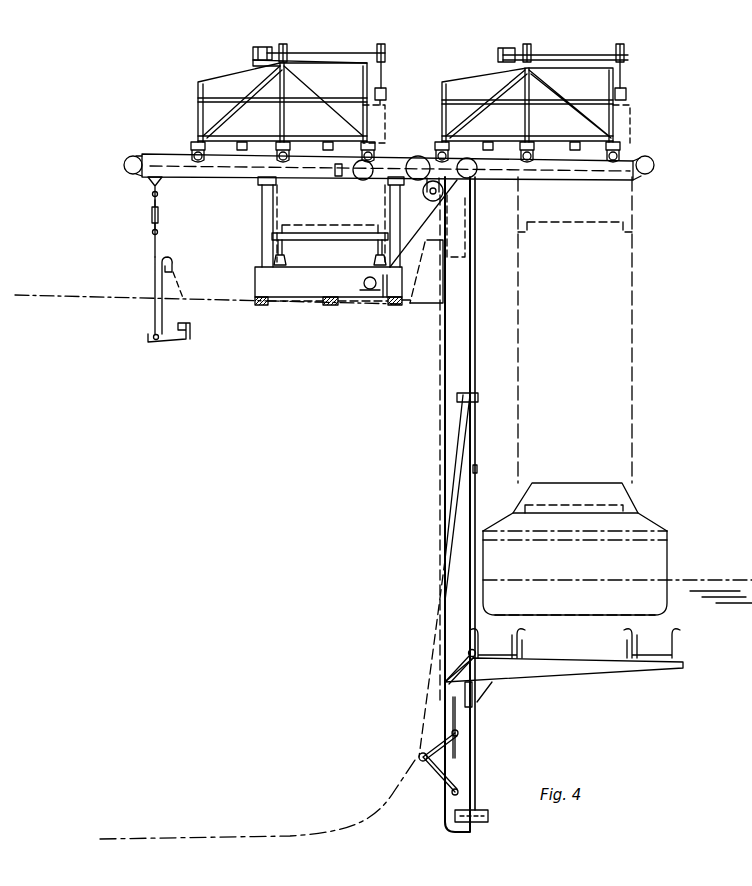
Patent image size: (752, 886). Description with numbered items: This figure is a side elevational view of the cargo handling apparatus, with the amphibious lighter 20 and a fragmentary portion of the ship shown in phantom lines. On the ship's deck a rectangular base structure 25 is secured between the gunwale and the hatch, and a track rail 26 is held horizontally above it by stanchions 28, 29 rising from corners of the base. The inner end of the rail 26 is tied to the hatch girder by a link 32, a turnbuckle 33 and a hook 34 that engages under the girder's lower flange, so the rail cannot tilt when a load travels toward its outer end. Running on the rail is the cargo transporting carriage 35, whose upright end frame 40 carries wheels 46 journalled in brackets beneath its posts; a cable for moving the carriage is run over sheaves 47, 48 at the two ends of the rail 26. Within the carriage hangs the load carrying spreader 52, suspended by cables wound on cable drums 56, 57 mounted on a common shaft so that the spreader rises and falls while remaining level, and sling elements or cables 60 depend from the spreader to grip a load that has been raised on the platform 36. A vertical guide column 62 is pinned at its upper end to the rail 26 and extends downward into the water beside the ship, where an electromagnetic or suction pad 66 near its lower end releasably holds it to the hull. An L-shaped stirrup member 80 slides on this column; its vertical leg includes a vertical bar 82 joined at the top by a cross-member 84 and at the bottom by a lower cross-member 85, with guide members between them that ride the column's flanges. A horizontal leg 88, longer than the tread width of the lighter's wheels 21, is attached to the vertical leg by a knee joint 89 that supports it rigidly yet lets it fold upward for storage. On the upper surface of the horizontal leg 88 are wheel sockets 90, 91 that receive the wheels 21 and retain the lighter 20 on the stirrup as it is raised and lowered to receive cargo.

The lighter 20 is at (648, 521).
The wheels 21 is at (482, 598).
The rectangular base structure 25 is at (256, 283).
The track rail 26 is at (172, 177).
The stanchion 28 is at (261, 207).
The stanchion 29 is at (389, 203).
The link 32 is at (153, 259).
The turnbuckle 33 is at (151, 214).
The hook 34 is at (150, 335).
The cargo transporting carriage 35 is at (216, 72).
The platform 36 is at (291, 242).
The end frame 40 is at (238, 113).
The wheels 46 is at (296, 150).
The sheave 47 is at (128, 158).
The sheave 48 is at (654, 160).
The load carrying spreader 52 is at (386, 95).
The cable drum 56 is at (282, 45).
The cable drum 57 is at (388, 50).
The sling elements or cables 60 is at (197, 180).
The vertical guide column 62 is at (452, 340).
The electromagnetic or suction pad 66 is at (413, 764).
The L-shaped stirrup member 80 is at (455, 437).
The vertical bar 82 is at (458, 512).
The cross-member 84 is at (490, 388).
The lower cross-member 85 is at (475, 700).
The horizontal leg 88 is at (527, 678).
The knee joint 89 is at (478, 660).
The wheel socket 90 is at (521, 643).
The wheel socket 91 is at (628, 641).